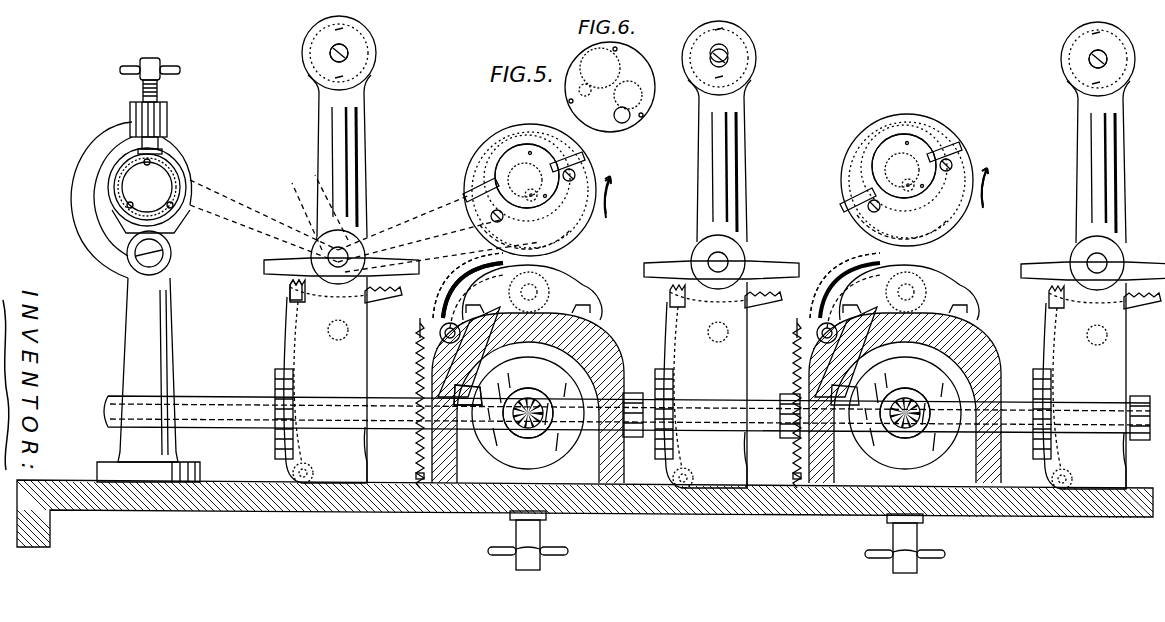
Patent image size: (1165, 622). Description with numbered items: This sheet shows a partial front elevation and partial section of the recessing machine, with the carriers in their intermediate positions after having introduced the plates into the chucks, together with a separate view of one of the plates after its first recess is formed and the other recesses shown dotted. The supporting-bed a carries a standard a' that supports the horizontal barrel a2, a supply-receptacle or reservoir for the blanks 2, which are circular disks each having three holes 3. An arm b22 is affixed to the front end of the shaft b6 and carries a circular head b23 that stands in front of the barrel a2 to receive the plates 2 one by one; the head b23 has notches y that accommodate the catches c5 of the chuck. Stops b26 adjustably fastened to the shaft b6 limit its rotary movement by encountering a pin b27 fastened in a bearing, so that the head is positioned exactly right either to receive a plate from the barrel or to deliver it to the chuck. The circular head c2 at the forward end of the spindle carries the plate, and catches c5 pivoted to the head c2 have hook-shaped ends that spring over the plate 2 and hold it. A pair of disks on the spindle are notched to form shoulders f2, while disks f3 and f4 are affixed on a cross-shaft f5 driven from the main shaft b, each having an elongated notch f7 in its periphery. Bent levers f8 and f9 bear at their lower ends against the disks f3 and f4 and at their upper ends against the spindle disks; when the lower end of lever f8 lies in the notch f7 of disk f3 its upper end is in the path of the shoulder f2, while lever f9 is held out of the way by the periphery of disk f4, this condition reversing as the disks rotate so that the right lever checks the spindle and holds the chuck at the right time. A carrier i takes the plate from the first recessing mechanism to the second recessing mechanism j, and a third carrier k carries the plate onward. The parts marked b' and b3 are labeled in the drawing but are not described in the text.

In FIG. 5, the blanks 2 is at (112, 187).
In FIG. 6, the blanks 2 is at (610, 85).
In FIG. 6, the holes 3 is at (616, 50).
In FIG. 5, the supporting-bed a is at (585, 513).
In FIG. 5, the standard a' is at (138, 380).
In FIG. 5, the horizontal barrel a2 is at (172, 158).
In FIG. 5, the main shaft b is at (627, 400).
In FIG. 5, the gear b' is at (256, 417).
In FIG. 5, the lever body b3 is at (292, 350).
In FIG. 5, the shaft b6 is at (292, 305).
In FIG. 5, the arm b22 is at (358, 138).
In FIG. 5, the circular head b23 is at (360, 52).
In FIG. 5, the stops b26 is at (275, 268).
In FIG. 5, the pin b27 is at (340, 348).
In FIG. 5, the circular head c2 is at (580, 230).
In FIG. 5, the catches c5 is at (470, 188).
In FIG. 5, the shoulder f2 is at (618, 182).
In FIG. 5, the disk f3 is at (582, 443).
In FIG. 5, the disk f4 is at (420, 380).
In FIG. 5, the cross-shaft f5 is at (535, 440).
In FIG. 5, the elongated notch f7 is at (485, 395).
In FIG. 5, the bent lever f8 is at (432, 313).
In FIG. 5, the bent lever f9 is at (470, 272).
In FIG. 5, the carrier i is at (735, 188).
In FIG. 5, the second recessing mechanism j is at (983, 212).
In FIG. 5, the third carrier k is at (1082, 165).
In FIG. 5, the notches y is at (345, 28).